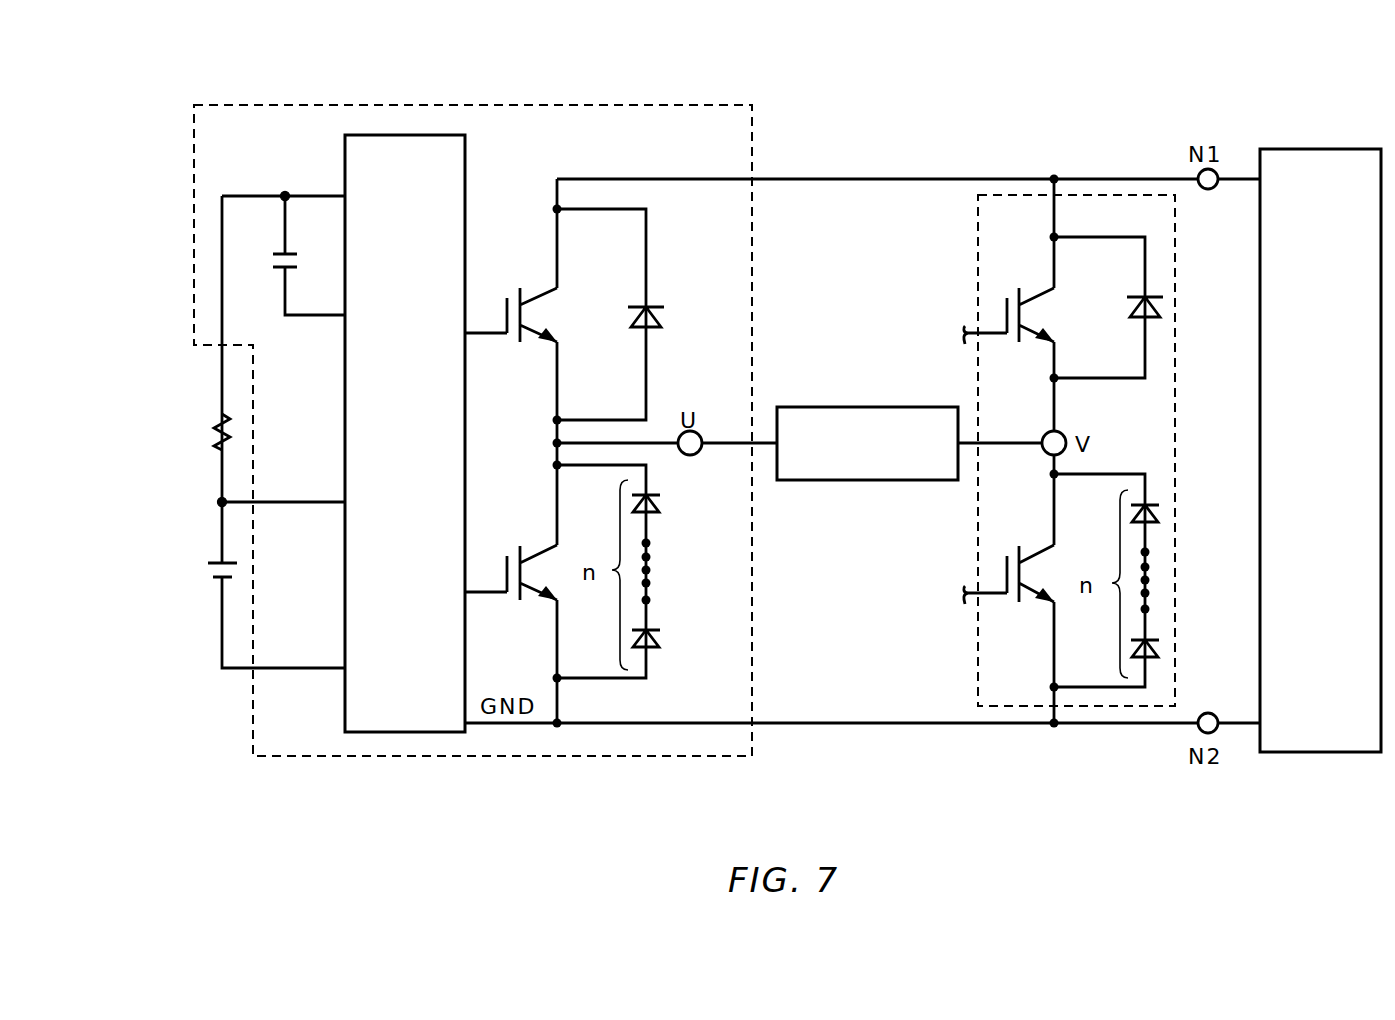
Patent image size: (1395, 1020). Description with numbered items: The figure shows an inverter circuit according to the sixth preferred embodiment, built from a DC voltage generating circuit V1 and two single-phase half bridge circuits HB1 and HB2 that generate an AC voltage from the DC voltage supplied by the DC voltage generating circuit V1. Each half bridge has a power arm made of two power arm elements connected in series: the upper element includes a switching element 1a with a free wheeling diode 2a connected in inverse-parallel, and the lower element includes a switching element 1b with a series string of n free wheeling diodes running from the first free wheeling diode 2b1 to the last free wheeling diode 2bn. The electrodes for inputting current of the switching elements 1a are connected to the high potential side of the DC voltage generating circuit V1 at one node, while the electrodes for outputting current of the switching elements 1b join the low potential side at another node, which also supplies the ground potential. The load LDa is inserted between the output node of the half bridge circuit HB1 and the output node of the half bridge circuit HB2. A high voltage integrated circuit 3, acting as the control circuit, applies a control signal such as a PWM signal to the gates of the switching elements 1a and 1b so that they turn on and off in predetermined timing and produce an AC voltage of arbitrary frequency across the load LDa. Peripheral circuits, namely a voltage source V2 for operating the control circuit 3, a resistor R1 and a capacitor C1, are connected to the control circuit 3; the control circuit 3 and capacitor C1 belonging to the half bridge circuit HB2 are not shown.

The HVIC 3 is at (406, 135).
The switching element 1a is at (519, 287).
The switching element 1b is at (518, 542).
The free wheeling diode 2a is at (667, 315).
The free wheeling diode 2b1 is at (662, 505).
The free wheeling diode 2bn is at (662, 640).
The half bridge circuit HB1 is at (533, 105).
The half bridge circuit HB2 is at (1078, 192).
The load LDa is at (872, 482).
The DC voltage generating circuit V1 is at (1320, 149).
The capacitor C1 is at (304, 262).
The resistor R1 is at (202, 432).
The voltage source V2 is at (203, 578).